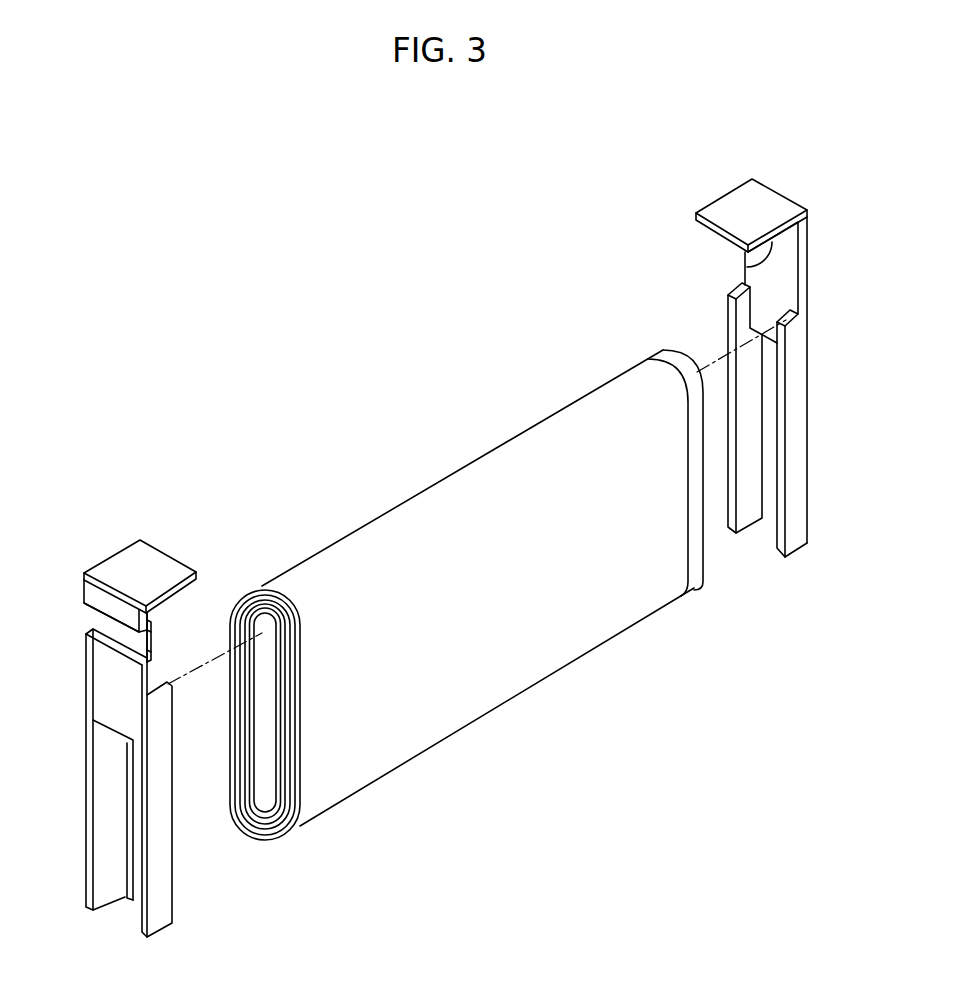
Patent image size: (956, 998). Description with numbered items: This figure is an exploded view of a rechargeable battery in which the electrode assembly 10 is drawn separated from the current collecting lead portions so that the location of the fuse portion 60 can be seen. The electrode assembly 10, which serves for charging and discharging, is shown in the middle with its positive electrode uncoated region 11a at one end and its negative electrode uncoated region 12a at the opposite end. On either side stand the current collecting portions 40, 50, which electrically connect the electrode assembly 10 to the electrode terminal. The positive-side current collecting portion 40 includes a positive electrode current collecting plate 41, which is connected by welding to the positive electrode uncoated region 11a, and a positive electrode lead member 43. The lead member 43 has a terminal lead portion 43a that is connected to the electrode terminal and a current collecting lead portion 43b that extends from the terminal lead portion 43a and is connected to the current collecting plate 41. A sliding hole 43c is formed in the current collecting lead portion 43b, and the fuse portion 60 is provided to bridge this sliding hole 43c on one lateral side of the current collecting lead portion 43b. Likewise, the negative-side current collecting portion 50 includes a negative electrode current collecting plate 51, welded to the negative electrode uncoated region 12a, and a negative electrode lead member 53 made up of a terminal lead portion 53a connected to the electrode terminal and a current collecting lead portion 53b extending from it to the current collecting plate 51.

The electrode assembly 10 is at (477, 608).
The positive electrode uncoated region 11a is at (300, 826).
The negative electrode uncoated region 12a is at (698, 583).
The current collecting portion 40 is at (198, 698).
The positive electrode current collecting plate 41 is at (173, 875).
The positive electrode lead member 43 is at (198, 551).
The terminal lead portion 43a is at (185, 588).
The current collecting lead portion 43b is at (150, 615).
The sliding hole 43c is at (102, 636).
The current collecting portion 50 is at (695, 384).
The negative electrode current collecting plate 51 is at (800, 548).
The negative electrode lead member 53 is at (692, 380).
The terminal lead portion 53a is at (743, 267).
The current collecting lead portion 53b is at (805, 268).
The fuse portion 60 is at (163, 636).